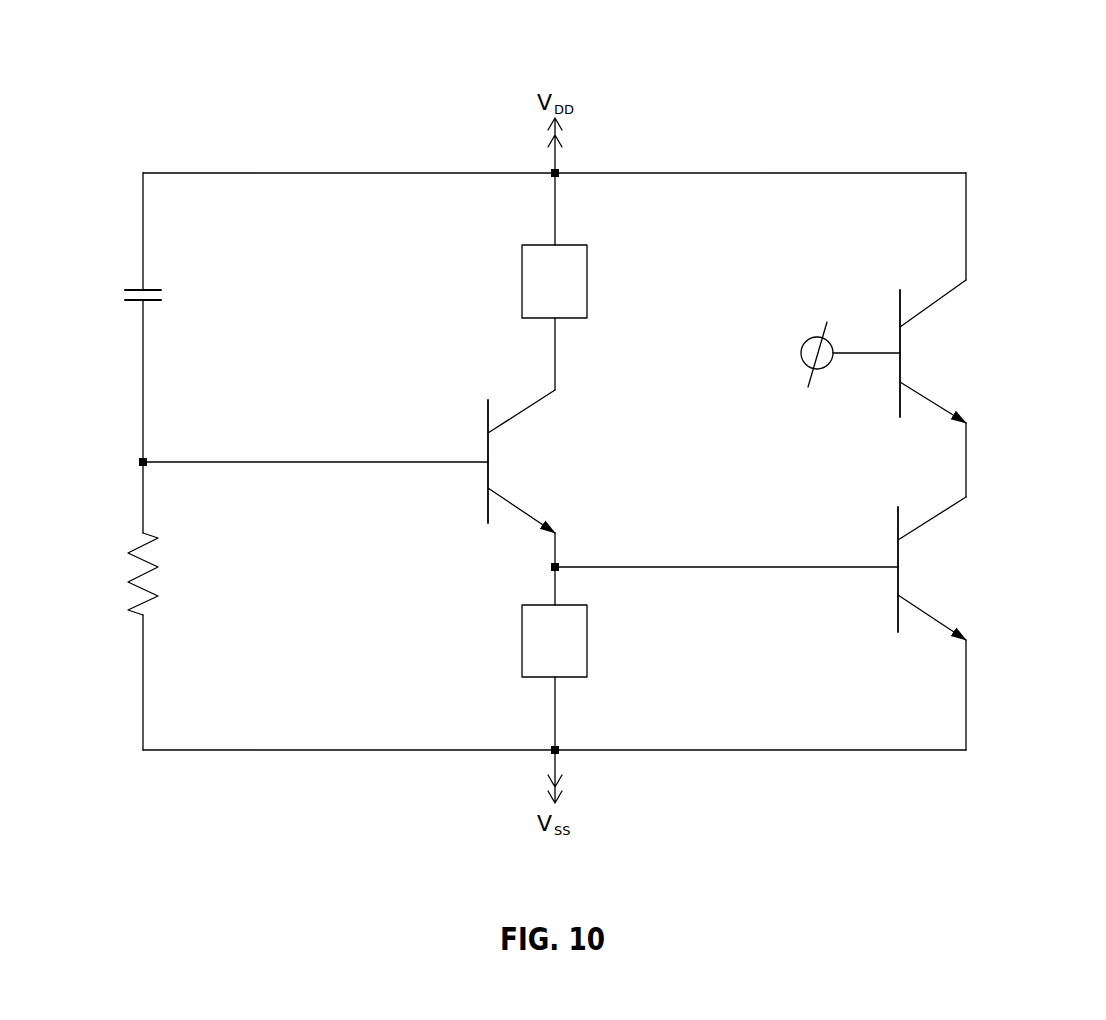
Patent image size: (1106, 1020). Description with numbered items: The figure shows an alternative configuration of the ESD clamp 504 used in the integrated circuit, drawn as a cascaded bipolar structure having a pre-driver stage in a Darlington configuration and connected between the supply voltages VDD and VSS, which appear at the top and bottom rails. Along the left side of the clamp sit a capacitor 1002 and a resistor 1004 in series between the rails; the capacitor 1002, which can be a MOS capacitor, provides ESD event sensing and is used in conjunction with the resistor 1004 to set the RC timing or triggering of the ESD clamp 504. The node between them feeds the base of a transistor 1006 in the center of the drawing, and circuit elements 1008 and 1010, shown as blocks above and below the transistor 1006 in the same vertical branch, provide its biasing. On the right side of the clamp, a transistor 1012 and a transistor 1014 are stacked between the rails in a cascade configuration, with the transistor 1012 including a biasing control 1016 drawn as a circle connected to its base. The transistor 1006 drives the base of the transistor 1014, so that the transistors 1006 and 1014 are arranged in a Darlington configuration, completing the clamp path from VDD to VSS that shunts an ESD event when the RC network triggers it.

The ESD clamp 504 is at (1000, 126).
The capacitor 1002 is at (125, 280).
The resistor 1004 is at (124, 565).
The transistor 1006 is at (537, 461).
The circuit element 1008 is at (587, 262).
The circuit element 1010 is at (587, 620).
The transistor 1012 is at (916, 351).
The transistor 1014 is at (947, 568).
The biasing control 1016 is at (801, 351).